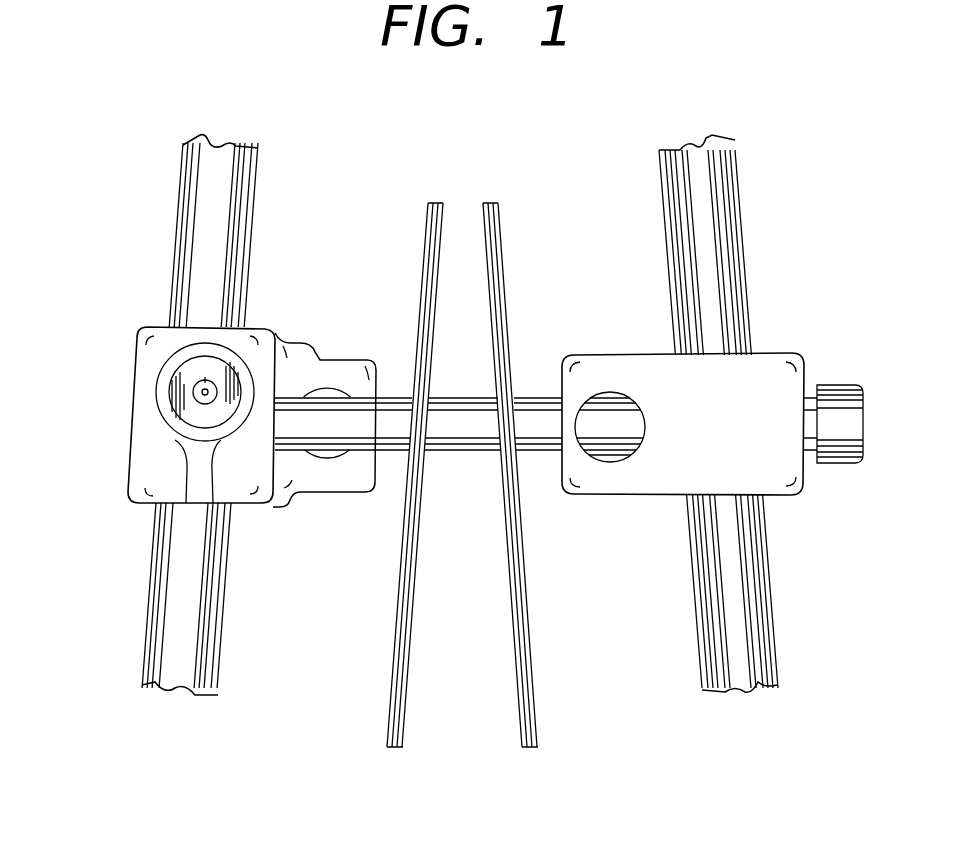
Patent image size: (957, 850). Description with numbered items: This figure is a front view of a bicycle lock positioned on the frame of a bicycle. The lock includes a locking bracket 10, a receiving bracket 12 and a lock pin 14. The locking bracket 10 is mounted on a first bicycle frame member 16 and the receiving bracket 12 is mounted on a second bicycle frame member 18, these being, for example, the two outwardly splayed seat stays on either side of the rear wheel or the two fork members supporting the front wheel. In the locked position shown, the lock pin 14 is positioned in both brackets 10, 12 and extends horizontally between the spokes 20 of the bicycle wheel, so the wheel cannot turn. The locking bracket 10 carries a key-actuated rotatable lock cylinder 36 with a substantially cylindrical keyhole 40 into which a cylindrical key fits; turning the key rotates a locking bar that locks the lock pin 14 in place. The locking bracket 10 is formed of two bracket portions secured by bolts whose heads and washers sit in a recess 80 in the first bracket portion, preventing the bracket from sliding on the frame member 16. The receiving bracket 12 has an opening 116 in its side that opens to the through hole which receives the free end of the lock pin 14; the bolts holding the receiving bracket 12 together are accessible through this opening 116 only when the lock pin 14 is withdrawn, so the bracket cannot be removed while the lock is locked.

The locking bracket 10 is at (262, 342).
The receiving bracket 12 is at (650, 372).
The lock pin 14 is at (456, 436).
The first bicycle frame member 16 is at (163, 625).
The second bicycle frame member 18 is at (742, 597).
The spokes 20 is at (403, 707).
The rotatable lock cylinder 36 is at (192, 365).
The keyhole 40 is at (200, 405).
The recess 80 is at (328, 458).
The opening 116 is at (608, 465).